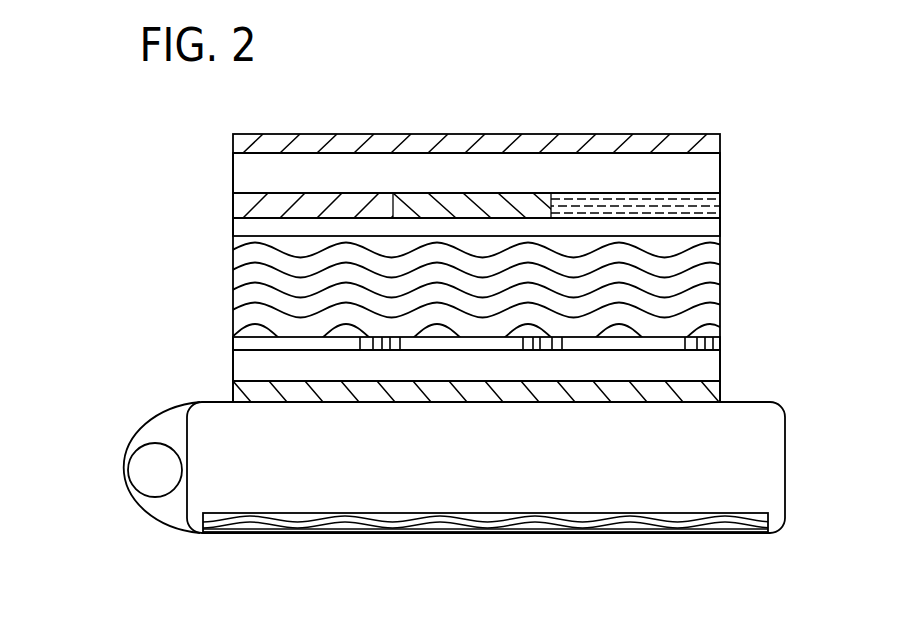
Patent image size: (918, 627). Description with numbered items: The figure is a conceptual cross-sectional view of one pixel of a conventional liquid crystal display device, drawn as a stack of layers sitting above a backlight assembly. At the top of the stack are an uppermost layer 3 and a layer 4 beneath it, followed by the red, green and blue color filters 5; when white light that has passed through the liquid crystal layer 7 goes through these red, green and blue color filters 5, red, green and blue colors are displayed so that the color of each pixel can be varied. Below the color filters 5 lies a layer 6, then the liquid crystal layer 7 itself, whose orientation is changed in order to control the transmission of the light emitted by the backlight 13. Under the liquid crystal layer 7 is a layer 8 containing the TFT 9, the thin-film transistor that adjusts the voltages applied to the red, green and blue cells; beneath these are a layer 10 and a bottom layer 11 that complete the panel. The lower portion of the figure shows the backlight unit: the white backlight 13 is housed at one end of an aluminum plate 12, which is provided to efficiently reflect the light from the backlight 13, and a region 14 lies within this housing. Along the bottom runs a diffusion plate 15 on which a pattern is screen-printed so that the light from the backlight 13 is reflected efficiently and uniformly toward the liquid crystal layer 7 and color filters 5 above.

The upper polarizing plate 3 is at (640, 135).
The upper glass substrate 4 is at (703, 175).
The color filters 5 is at (710, 210).
The common transparent electrode 6 is at (248, 228).
The liquid crystal layer 7 is at (690, 270).
The pixel electrode layer 8 is at (242, 343).
The TFT 9 is at (718, 342).
The lower glass substrate 10 is at (695, 368).
The lower polarizing plate 11 is at (708, 392).
The aluminum plate 12 is at (142, 418).
The backlight 13 is at (152, 470).
The backlight unit 14 is at (370, 472).
The diffusion plate 15 is at (557, 528).